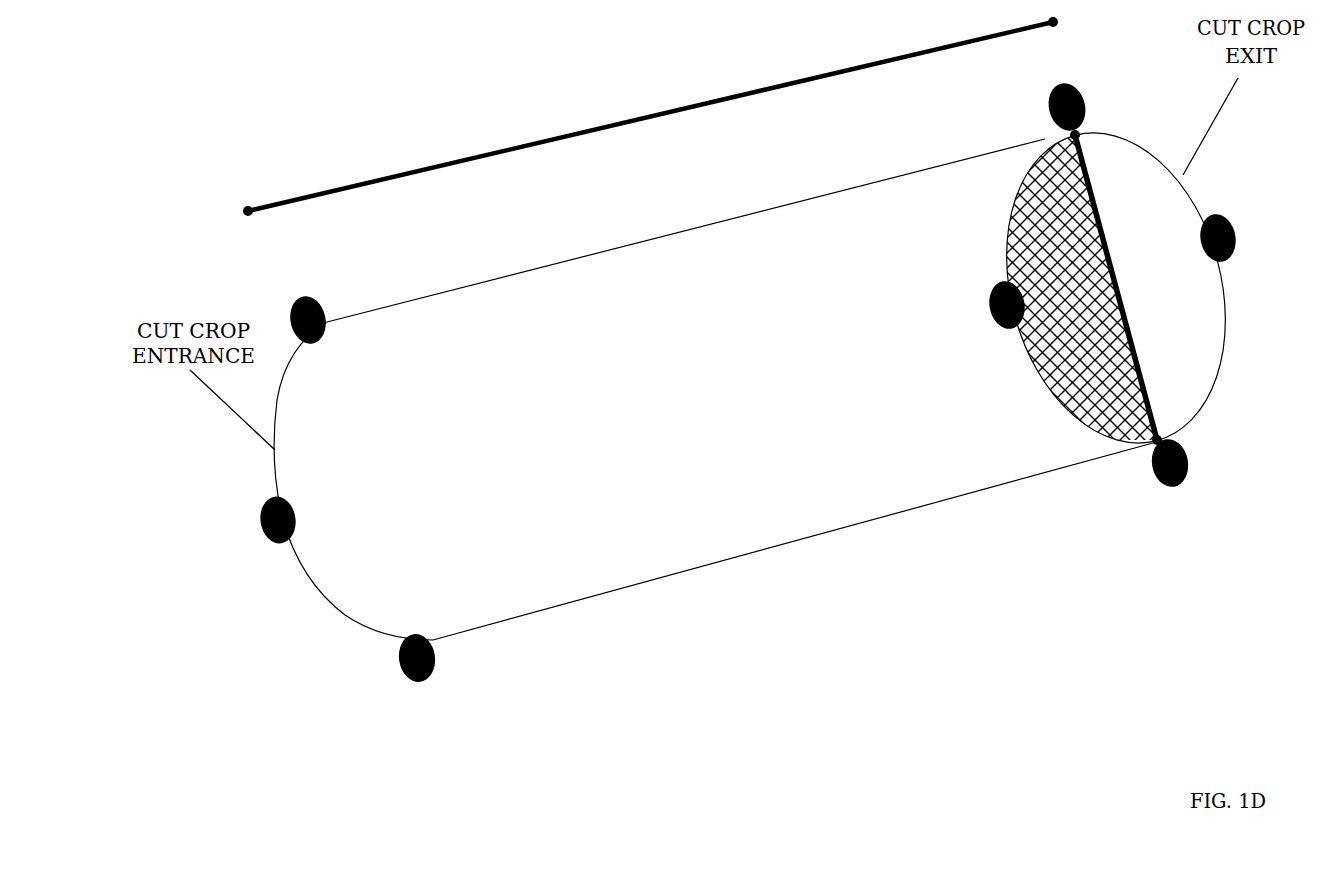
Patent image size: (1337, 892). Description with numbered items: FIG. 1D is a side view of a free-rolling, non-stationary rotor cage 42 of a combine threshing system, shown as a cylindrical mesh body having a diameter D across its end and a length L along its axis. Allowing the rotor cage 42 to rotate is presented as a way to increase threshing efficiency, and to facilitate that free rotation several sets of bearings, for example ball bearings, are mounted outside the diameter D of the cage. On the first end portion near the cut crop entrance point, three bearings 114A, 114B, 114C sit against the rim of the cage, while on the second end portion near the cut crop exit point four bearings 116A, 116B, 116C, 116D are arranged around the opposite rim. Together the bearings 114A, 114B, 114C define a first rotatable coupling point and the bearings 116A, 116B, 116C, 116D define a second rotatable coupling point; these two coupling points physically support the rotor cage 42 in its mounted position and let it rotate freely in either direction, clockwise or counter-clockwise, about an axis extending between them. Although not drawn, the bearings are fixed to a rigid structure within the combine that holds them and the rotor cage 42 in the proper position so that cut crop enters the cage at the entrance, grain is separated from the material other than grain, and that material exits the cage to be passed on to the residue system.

The rotor cage 42 is at (695, 232).
The length L is at (710, 105).
The diameter D is at (1102, 203).
The bearing 114A is at (298, 308).
The bearing 114B is at (266, 519).
The bearing 114C is at (414, 674).
The bearing 116A is at (1060, 96).
The bearing 116B is at (993, 293).
The bearing 116C is at (1160, 484).
The bearing 116D is at (1227, 216).